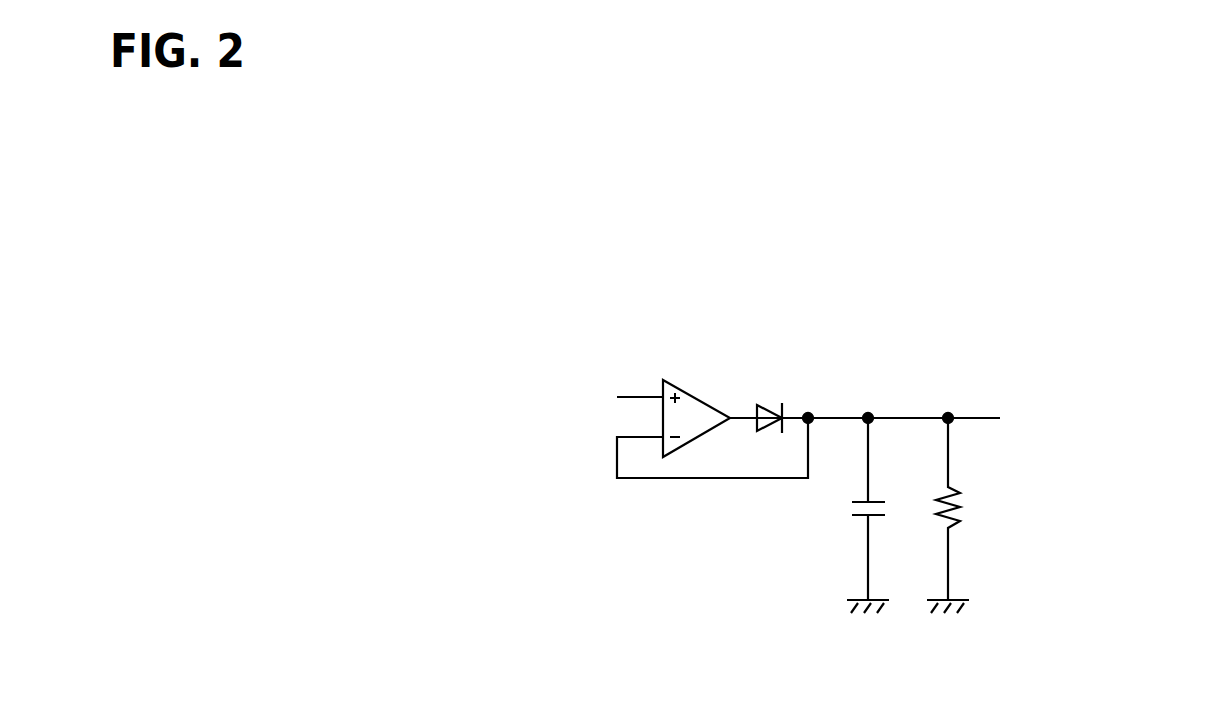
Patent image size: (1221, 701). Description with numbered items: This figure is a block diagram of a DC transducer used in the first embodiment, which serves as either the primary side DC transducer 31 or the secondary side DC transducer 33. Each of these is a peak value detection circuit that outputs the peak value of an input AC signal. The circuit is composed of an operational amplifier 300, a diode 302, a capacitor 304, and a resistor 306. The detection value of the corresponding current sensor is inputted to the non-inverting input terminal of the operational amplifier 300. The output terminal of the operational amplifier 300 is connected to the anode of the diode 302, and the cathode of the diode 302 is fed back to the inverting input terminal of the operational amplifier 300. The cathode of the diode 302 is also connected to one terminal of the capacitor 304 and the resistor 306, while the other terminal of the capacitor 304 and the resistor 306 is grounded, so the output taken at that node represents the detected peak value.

The primary side DC transducer 31 is at (1005, 334).
The secondary side DC transducer 33 is at (777, 474).
The operational amplifier 300 is at (687, 389).
The diode 302 is at (768, 404).
The capacitor 304 is at (878, 503).
The resistor 306 is at (976, 470).